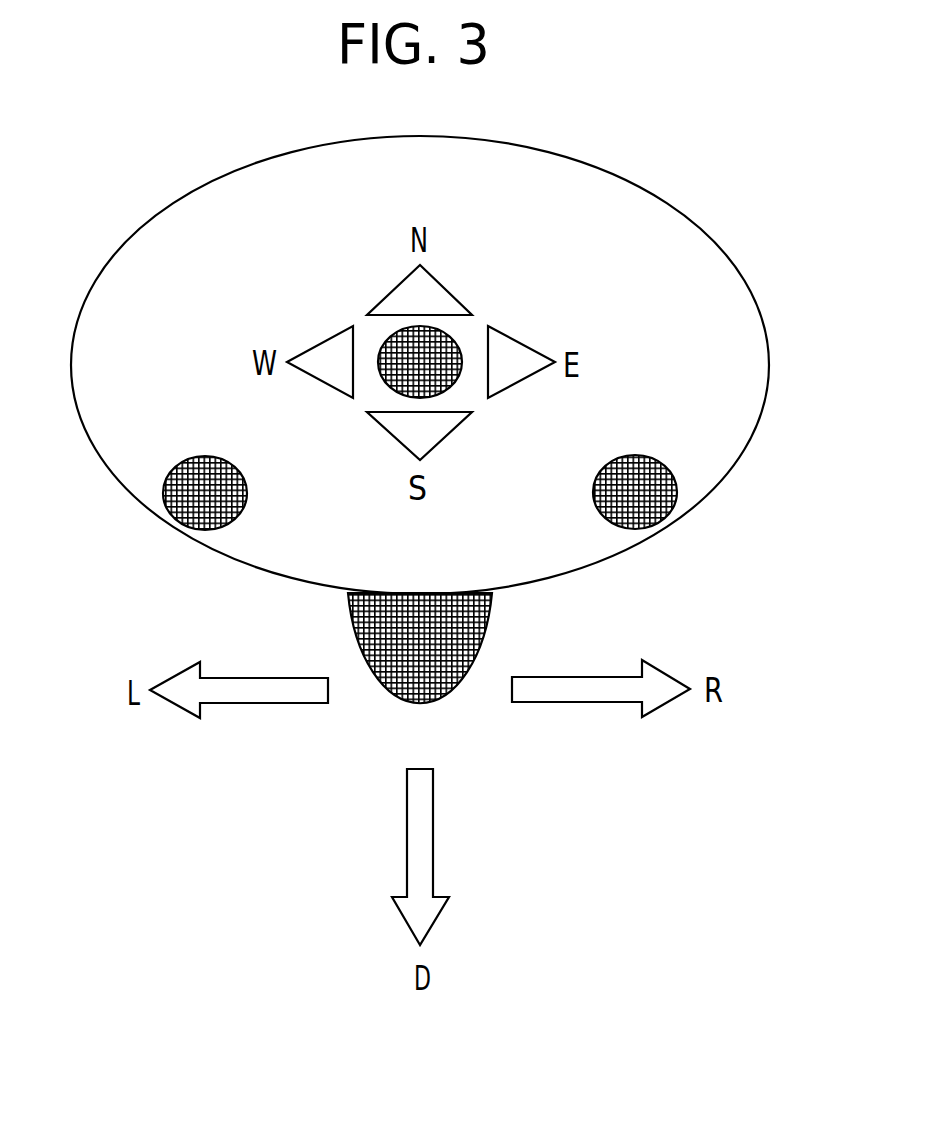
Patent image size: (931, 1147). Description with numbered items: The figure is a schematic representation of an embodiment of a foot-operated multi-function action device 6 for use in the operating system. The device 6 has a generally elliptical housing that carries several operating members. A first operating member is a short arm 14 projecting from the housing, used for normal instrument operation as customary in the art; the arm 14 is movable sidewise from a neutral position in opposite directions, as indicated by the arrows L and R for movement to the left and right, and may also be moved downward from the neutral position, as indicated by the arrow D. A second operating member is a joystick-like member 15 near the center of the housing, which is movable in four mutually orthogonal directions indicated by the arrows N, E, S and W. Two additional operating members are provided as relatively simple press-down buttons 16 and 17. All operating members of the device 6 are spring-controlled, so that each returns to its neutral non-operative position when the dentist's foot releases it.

The multi-function foot-operated action device 6 is at (137, 230).
The short arm 14 is at (383, 707).
The joystick-like member 15 is at (457, 343).
The press-down button 16 is at (163, 512).
The press-down button 17 is at (675, 507).